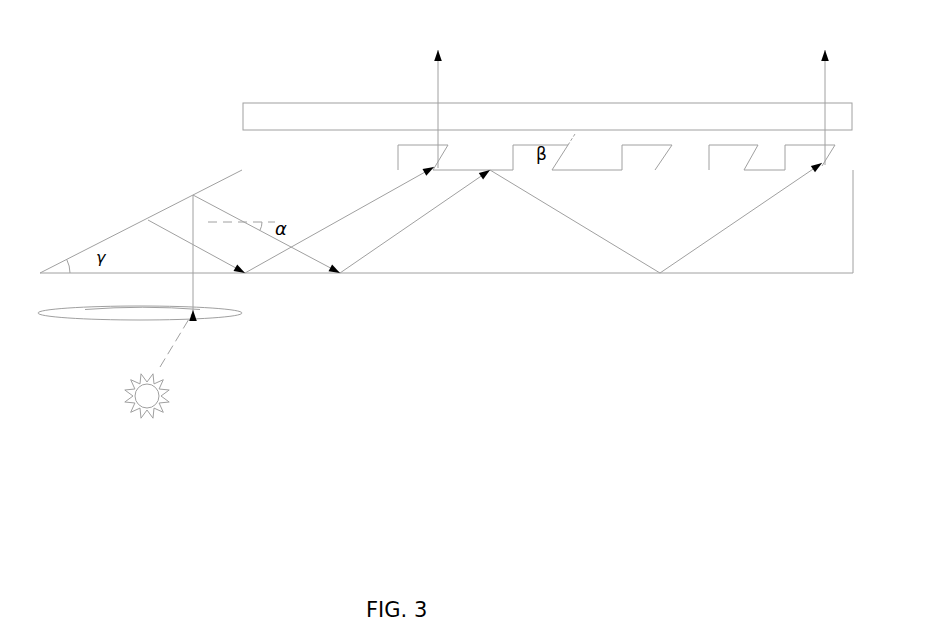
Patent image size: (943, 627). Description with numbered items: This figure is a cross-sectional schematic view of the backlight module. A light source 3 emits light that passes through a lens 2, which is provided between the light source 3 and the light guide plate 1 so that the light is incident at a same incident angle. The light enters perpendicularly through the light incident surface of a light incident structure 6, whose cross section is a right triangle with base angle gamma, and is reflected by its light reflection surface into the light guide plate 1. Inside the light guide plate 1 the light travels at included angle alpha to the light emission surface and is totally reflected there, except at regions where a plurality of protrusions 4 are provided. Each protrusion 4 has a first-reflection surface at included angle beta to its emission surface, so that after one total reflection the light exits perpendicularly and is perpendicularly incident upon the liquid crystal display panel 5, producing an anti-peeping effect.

The light guide plate 1 is at (330, 180).
The lens 2 is at (213, 312).
The light source 3 is at (168, 407).
The protrusions 4 is at (412, 158).
The liquid crystal display panel 5 is at (539, 108).
The light incident structure 6 is at (227, 193).